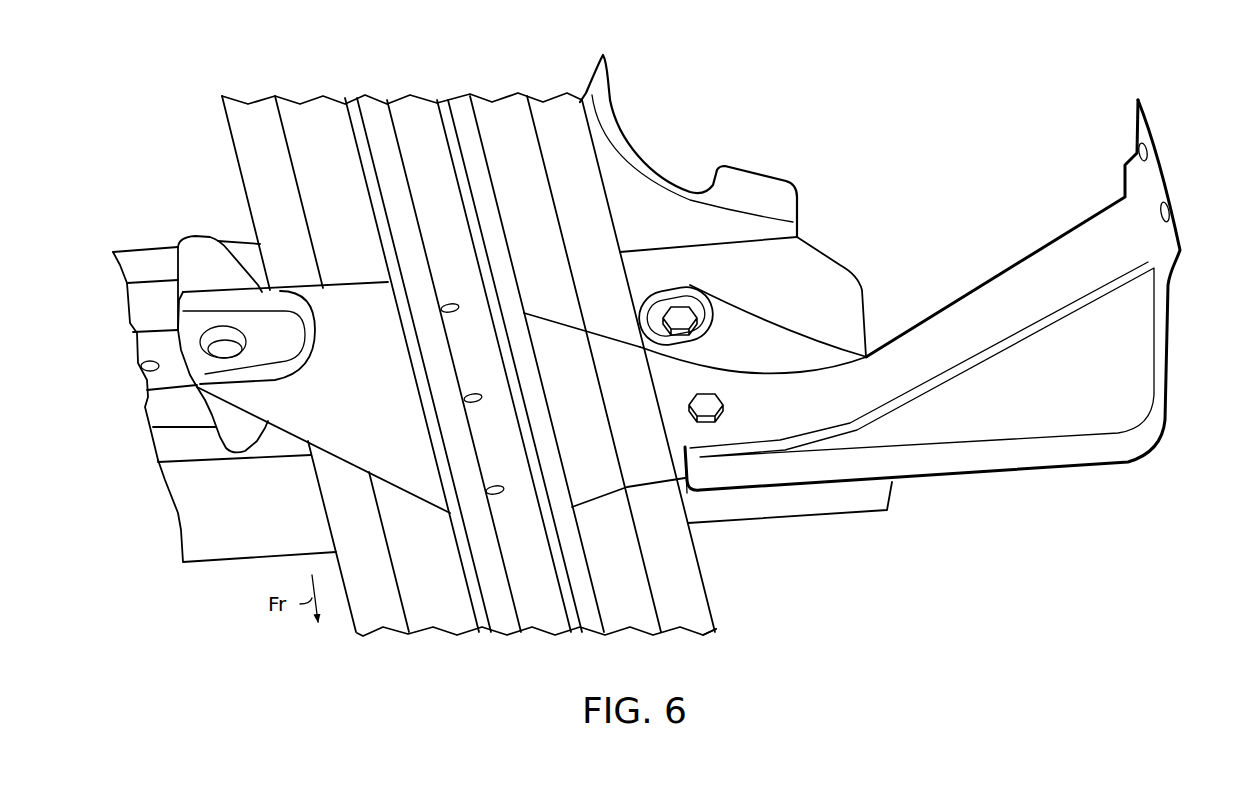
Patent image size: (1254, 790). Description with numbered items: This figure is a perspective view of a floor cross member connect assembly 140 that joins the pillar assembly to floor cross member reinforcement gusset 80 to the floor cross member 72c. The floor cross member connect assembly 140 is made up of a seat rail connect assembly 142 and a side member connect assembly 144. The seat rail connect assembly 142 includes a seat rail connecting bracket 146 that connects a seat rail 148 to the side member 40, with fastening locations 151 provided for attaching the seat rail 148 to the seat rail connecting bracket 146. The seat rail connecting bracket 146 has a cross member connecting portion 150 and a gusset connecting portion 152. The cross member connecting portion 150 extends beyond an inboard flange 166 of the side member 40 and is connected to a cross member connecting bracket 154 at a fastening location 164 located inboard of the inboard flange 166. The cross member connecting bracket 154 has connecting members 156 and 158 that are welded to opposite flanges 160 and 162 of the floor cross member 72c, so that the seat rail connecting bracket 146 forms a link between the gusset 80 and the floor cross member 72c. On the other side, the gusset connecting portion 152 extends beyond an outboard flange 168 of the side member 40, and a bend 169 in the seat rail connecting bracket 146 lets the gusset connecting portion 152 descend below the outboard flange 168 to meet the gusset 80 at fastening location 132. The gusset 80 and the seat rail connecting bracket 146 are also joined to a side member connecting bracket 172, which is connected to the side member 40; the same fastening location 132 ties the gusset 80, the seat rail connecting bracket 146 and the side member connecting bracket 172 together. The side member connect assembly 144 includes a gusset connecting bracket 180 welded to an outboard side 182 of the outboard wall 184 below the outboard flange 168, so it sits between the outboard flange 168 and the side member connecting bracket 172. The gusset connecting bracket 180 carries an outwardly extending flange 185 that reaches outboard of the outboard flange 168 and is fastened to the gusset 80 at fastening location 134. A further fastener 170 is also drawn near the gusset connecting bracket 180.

The side member 40 is at (378, 632).
The floor cross member 72c is at (218, 548).
The pillar assembly to floor cross member reinforcement gusset 80 is at (1195, 112).
The fastening location 132 is at (680, 421).
The fastening location 134 is at (665, 337).
The floor cross member connect assembly 140 is at (705, 162).
The seat rail connect assembly 142 is at (660, 505).
The side member connect assembly 144 is at (650, 272).
The seat rail connecting bracket 146 is at (610, 515).
The seat rail 148 is at (412, 108).
The cross member connecting portion 150 is at (344, 248).
The fastening locations 151 is at (450, 300).
The gusset connecting portion 152 is at (607, 328).
The cross member connecting bracket 154 is at (133, 330).
The connecting member 156 is at (197, 248).
The connecting member 158 is at (252, 447).
The flange 160 is at (133, 250).
The flange 162 is at (198, 447).
The fastening location 164 is at (258, 338).
The inboard flange 166 is at (333, 520).
The outboard flange 168 is at (558, 108).
The bend 169 is at (408, 362).
The bolt 170 is at (730, 390).
The side member connecting bracket 172 is at (845, 290).
The gusset connecting bracket 180 is at (692, 284).
The outboard side 182 is at (722, 632).
The outboard wall 184 is at (618, 632).
The outwardly extending flange 185 is at (712, 297).